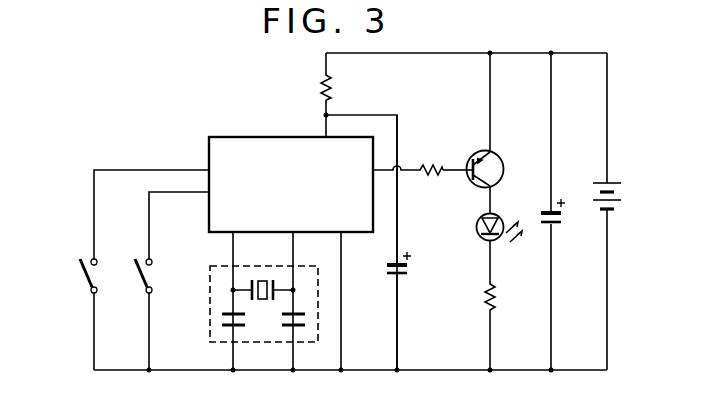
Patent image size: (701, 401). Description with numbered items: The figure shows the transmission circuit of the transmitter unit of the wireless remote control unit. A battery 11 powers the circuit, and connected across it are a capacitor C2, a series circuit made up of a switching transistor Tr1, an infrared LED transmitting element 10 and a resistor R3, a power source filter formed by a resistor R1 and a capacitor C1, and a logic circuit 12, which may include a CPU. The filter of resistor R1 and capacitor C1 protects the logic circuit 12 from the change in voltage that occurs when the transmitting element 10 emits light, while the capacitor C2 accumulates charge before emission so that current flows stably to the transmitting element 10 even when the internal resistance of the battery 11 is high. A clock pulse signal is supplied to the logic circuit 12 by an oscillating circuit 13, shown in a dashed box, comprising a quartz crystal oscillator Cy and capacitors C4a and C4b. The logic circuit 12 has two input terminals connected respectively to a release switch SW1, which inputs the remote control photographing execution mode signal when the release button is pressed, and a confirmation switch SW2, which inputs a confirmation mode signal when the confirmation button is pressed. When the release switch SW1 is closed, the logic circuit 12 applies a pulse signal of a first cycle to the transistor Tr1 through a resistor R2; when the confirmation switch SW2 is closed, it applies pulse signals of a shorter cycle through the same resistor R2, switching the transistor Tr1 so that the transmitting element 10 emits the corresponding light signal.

The logic circuit 12 is at (246, 150).
The resistor R1 is at (332, 89).
The resistor R2 is at (422, 167).
The resistor R3 is at (494, 300).
The switching transistor Tr1 is at (498, 163).
The transmitting element 10 is at (478, 226).
The capacitor C1 is at (404, 273).
The capacitor C2 is at (563, 218).
The battery 11 is at (614, 192).
The release switch SW1 is at (82, 268).
The confirmation switch SW2 is at (134, 267).
The oscillating circuit 13 is at (214, 277).
The quartz crystal oscillator Cy is at (260, 282).
The capacitor C4a is at (222, 320).
The capacitor C4b is at (283, 322).